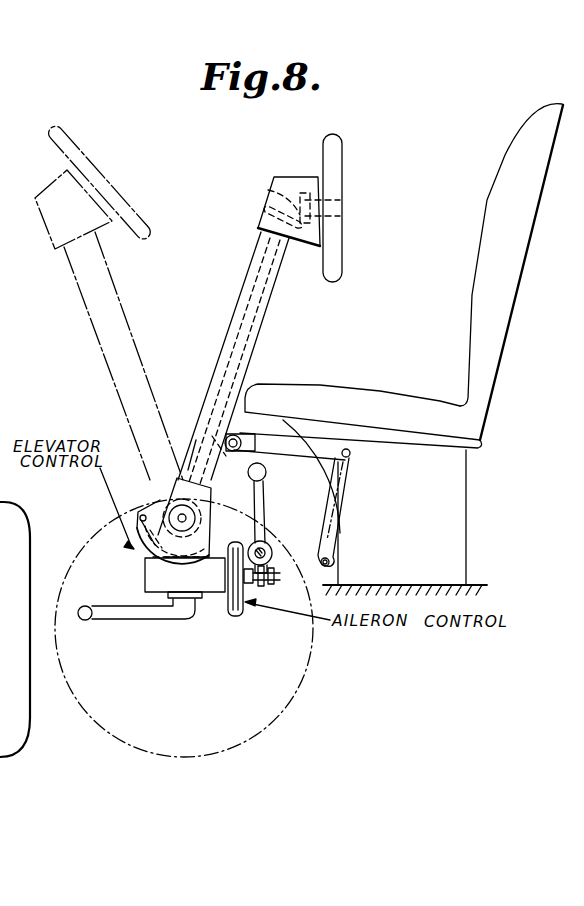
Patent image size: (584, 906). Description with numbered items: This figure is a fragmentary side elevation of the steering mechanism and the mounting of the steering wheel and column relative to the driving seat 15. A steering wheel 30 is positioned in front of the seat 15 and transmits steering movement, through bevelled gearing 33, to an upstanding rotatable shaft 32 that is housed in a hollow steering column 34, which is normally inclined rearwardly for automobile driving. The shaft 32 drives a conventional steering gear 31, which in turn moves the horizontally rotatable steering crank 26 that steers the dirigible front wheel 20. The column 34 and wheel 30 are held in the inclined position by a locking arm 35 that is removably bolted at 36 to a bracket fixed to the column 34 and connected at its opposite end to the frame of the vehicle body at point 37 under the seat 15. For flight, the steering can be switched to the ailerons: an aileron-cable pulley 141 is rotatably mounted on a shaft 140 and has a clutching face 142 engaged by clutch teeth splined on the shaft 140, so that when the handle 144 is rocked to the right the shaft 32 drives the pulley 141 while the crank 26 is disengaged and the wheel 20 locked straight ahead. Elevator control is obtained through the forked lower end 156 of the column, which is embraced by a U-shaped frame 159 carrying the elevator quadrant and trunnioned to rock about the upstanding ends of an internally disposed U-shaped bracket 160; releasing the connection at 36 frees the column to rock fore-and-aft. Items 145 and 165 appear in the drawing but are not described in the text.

The seat 15 is at (489, 370).
The front wheel 20 is at (307, 682).
The steering crank 26 is at (143, 613).
The steering wheel 30 is at (334, 162).
The steering gear 31 is at (217, 584).
The rotatable shaft 32 is at (240, 343).
The bevelled gearing 33 is at (277, 190).
The steering column 34 is at (98, 335).
The locking arm 35 is at (293, 447).
The bolt connection 36 is at (233, 453).
The frame connection point 37 is at (351, 453).
The shaft 140 is at (272, 573).
The aileron-cable pulley 141 is at (248, 606).
The clutching face 142 is at (248, 542).
The handle 144 is at (266, 508).
The boss 145 is at (272, 540).
The forked lower end 156 is at (165, 507).
The U-shaped frame 159 is at (186, 462).
The U-shaped bracket 160 is at (147, 558).
The stop 165 is at (143, 555).